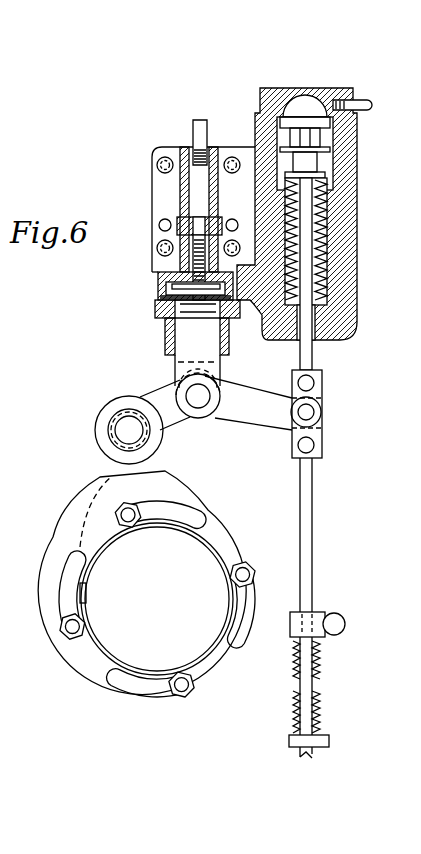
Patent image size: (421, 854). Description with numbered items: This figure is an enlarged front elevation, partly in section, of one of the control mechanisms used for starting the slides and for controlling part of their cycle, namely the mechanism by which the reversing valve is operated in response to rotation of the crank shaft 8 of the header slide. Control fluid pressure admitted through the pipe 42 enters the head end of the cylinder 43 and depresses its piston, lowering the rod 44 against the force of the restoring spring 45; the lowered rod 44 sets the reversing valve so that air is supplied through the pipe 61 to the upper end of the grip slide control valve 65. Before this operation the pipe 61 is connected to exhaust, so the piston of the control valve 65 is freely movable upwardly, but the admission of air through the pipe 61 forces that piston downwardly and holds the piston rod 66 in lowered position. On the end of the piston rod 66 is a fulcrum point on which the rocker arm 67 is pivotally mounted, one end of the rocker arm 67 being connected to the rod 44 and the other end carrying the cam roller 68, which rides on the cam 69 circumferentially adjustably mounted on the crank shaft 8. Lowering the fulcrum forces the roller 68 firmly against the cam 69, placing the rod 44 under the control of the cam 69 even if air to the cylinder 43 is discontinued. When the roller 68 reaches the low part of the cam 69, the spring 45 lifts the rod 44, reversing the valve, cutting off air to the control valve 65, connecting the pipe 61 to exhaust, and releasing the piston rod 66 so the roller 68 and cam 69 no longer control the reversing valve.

The crank shaft 8 is at (200, 573).
The pipe 42 is at (360, 102).
The cylinder 43 is at (357, 218).
The rod 44 is at (313, 357).
The restoring spring 45 is at (322, 683).
The pipe 61 is at (200, 118).
The grip slide control valve 65 is at (150, 289).
The piston rod 66 is at (197, 402).
The rocker arm 67 is at (243, 408).
The cam roller 68 is at (102, 409).
The cam 69 is at (53, 558).